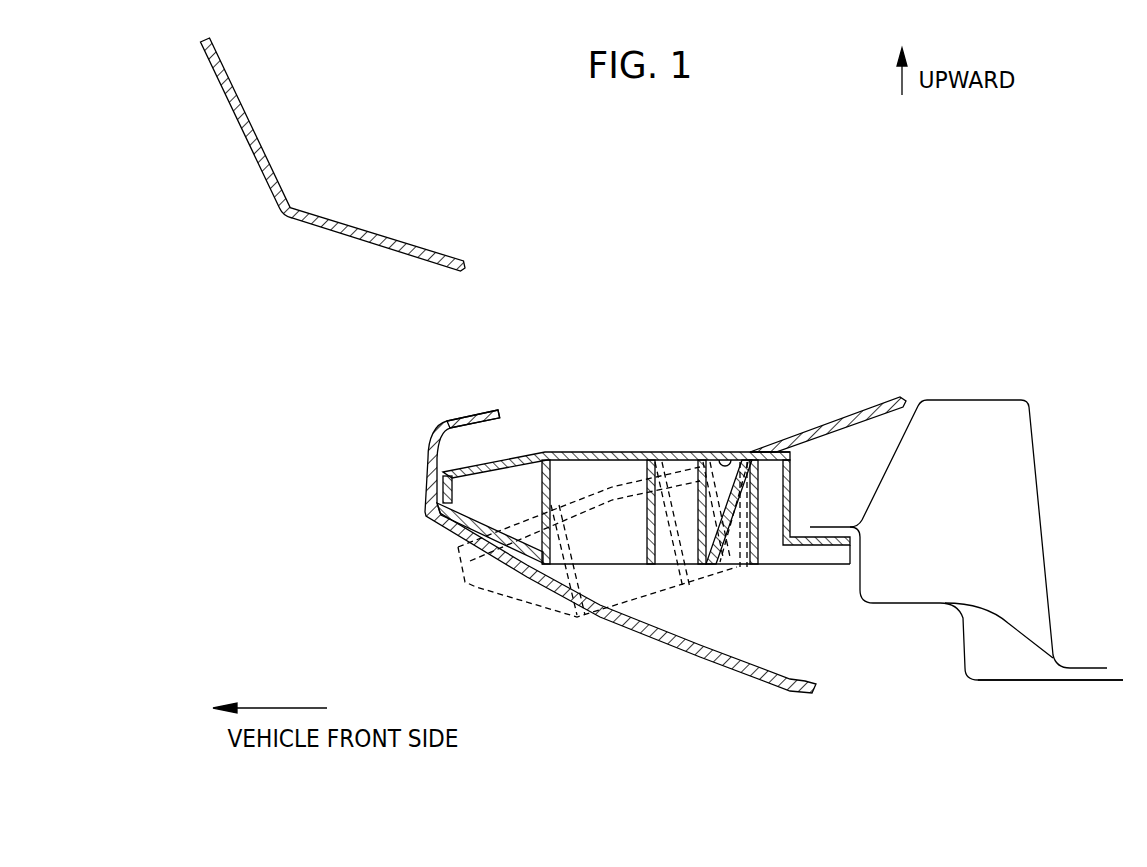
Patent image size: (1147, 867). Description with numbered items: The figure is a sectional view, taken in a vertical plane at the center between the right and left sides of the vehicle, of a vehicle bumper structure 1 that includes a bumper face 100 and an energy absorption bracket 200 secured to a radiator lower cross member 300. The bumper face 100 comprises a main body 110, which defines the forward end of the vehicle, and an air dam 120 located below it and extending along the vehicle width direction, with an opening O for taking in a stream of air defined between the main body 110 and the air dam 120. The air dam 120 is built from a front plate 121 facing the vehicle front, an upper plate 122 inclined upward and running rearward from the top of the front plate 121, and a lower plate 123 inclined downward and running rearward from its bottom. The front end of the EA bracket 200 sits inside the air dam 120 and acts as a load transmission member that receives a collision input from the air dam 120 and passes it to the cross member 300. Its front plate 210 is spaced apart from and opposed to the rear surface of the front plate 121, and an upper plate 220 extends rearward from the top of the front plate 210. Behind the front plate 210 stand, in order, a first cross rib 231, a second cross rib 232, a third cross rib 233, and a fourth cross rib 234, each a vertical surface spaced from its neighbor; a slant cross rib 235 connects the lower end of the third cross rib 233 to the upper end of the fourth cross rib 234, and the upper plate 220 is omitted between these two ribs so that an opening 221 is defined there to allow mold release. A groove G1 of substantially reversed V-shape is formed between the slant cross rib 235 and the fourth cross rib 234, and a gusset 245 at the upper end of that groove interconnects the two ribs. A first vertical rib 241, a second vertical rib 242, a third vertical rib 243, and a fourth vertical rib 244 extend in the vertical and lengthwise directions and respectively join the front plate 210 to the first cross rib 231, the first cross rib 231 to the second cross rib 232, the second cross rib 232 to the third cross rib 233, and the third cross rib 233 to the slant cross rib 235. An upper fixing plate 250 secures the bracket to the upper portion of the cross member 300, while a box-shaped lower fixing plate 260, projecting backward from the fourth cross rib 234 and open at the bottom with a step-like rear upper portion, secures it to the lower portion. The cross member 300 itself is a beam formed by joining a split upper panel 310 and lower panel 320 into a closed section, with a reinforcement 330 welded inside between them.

The vehicle bumper structure 1 is at (190, 92).
The bumper face 100 is at (153, 253).
The main body 110 is at (254, 205).
The air dam 120 is at (404, 424).
The front plate 121 is at (425, 462).
The upper plate 122 is at (458, 425).
The lower plate 123 is at (502, 568).
The opening O is at (476, 339).
The energy absorption bracket 200 is at (653, 358).
The front plate 210 is at (443, 490).
The upper plate 220 is at (602, 452).
The opening 221 is at (715, 430).
The first cross rib 231 is at (543, 510).
The second cross rib 232 is at (651, 458).
The third cross rib 233 is at (700, 458).
The fourth cross rib 234 is at (761, 530).
The slant cross rib 235 is at (718, 540).
The first vertical rib 241 is at (482, 524).
The second vertical rib 242 is at (594, 556).
The third vertical rib 243 is at (657, 567).
The fourth vertical rib 244 is at (731, 458).
The gusset 245 is at (757, 447).
The upper fixing plate 250 is at (853, 408).
The lower fixing plate 260 is at (820, 548).
The groove G1 is at (740, 550).
The radiator lower cross member 300 is at (1044, 380).
The upper panel 310 is at (965, 400).
The lower panel 320 is at (1003, 683).
The reinforcement 330 is at (1010, 613).